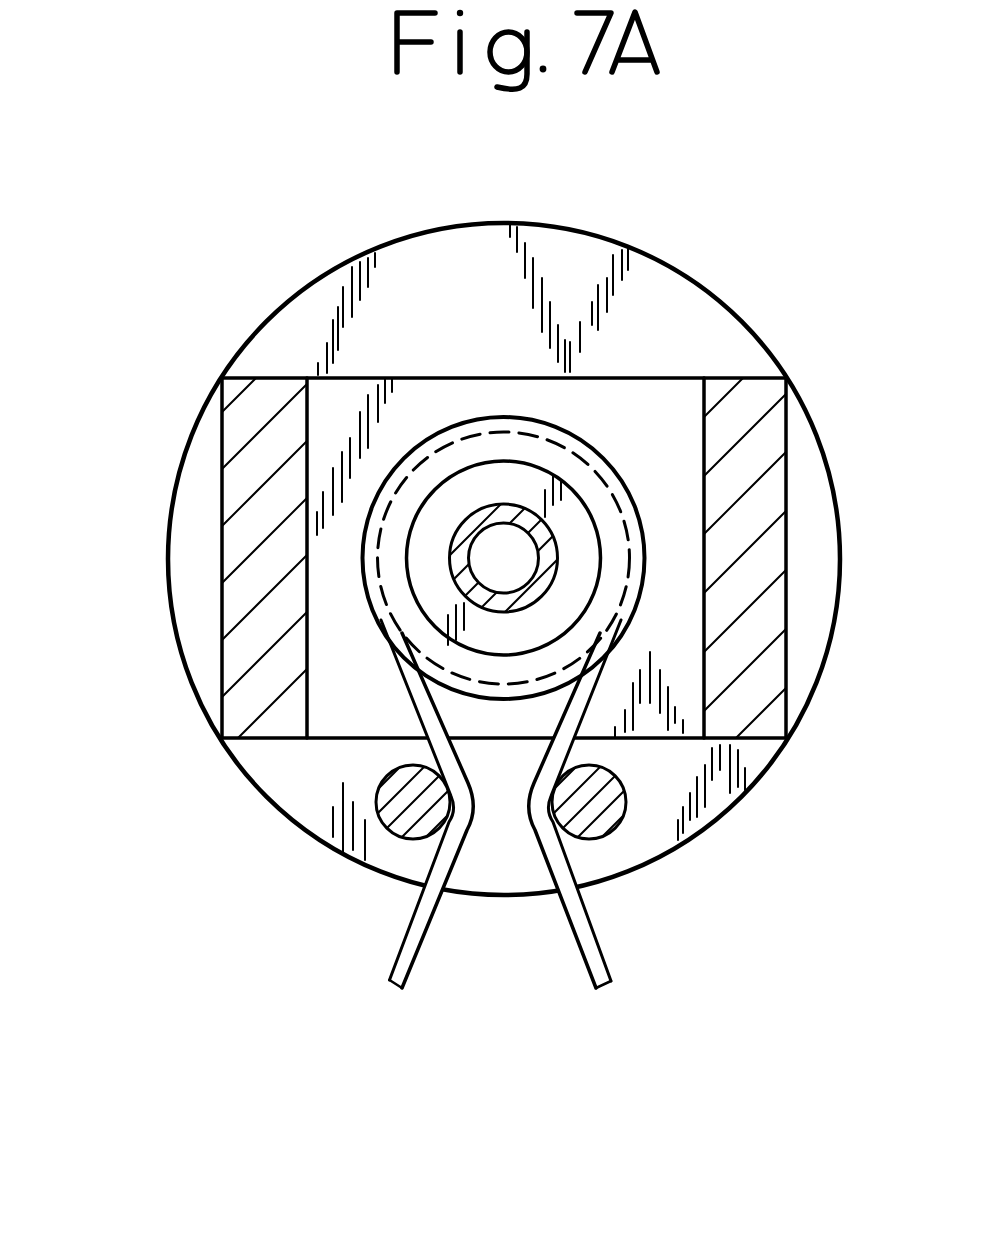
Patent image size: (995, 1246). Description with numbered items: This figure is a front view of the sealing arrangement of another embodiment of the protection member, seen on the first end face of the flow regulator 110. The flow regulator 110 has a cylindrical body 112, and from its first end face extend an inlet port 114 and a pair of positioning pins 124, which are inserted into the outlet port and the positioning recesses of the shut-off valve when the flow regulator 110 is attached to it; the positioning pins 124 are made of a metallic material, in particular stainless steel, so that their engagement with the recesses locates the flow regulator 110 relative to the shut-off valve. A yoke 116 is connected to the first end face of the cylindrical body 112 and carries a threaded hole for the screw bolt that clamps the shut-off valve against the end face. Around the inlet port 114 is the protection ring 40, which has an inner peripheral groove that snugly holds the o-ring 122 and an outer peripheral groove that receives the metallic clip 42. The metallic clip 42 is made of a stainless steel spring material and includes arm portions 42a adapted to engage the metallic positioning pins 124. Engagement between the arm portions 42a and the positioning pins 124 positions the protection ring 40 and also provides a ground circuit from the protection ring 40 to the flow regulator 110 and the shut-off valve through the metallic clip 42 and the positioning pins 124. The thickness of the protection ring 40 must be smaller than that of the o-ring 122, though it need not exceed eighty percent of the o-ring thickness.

The flow regulator 110 is at (521, 548).
The cylindrical body 112 is at (678, 308).
The protection ring 40 is at (575, 445).
The yoke 116 is at (765, 455).
The inlet port 114 is at (460, 545).
The o-ring 122 is at (423, 582).
The metallic clip 42 is at (394, 856).
The arm portions 42a is at (398, 987).
The positioning pins 124 is at (410, 833).